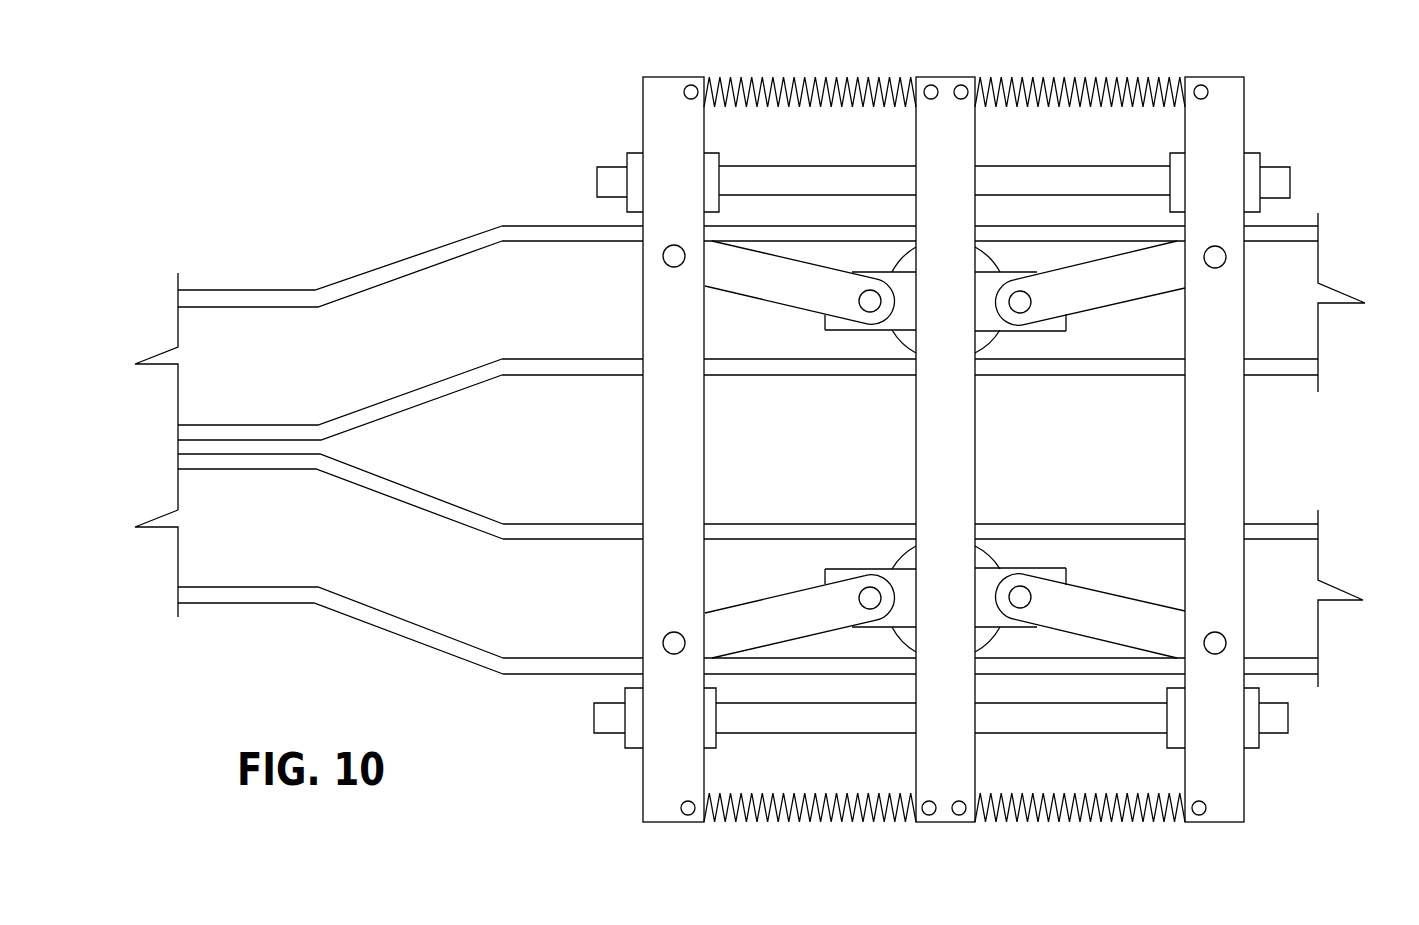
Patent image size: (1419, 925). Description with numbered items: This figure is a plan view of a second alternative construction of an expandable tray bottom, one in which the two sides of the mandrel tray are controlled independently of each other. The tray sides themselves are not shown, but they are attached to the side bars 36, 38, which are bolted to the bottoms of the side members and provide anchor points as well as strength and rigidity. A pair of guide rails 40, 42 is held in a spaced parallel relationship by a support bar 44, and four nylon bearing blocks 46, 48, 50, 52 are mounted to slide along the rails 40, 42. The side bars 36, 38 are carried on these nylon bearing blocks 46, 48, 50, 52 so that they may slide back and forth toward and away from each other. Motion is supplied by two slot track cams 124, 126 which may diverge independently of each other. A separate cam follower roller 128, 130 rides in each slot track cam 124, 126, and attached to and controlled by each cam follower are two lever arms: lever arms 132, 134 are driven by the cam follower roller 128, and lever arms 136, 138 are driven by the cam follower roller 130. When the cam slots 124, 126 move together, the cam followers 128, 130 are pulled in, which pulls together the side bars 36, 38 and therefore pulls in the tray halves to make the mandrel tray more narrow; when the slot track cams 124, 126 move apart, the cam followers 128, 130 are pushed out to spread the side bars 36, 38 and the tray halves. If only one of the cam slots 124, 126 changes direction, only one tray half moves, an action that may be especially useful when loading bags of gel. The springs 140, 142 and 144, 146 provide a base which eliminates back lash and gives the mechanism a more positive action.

The side bar 36 is at (663, 817).
The side bar 38 is at (1225, 822).
The guide rail 40 is at (1290, 183).
The guide rail 42 is at (1285, 718).
The support bar 44 is at (942, 822).
The nylon bearing block 46 is at (638, 150).
The nylon bearing block 48 is at (1172, 155).
The nylon bearing block 50 is at (630, 748).
The nylon bearing block 52 is at (1250, 748).
The slot track cam 124 is at (248, 313).
The slot track cam 126 is at (252, 580).
The cam follower roller 128 is at (985, 347).
The cam follower roller 130 is at (983, 553).
The lever arm 132 is at (752, 292).
The lever arm 134 is at (1115, 300).
The lever arm 136 is at (772, 602).
The lever arm 138 is at (1108, 600).
The spring 140 is at (788, 75).
The spring 142 is at (1053, 78).
The spring 144 is at (790, 822).
The spring 146 is at (1072, 822).